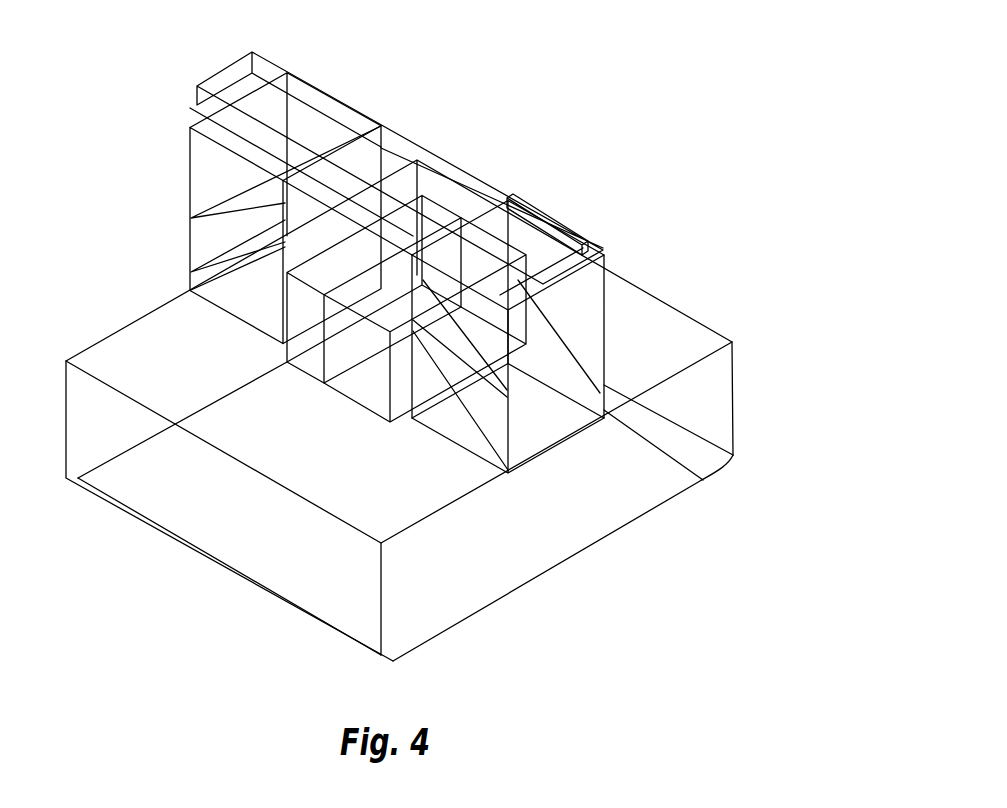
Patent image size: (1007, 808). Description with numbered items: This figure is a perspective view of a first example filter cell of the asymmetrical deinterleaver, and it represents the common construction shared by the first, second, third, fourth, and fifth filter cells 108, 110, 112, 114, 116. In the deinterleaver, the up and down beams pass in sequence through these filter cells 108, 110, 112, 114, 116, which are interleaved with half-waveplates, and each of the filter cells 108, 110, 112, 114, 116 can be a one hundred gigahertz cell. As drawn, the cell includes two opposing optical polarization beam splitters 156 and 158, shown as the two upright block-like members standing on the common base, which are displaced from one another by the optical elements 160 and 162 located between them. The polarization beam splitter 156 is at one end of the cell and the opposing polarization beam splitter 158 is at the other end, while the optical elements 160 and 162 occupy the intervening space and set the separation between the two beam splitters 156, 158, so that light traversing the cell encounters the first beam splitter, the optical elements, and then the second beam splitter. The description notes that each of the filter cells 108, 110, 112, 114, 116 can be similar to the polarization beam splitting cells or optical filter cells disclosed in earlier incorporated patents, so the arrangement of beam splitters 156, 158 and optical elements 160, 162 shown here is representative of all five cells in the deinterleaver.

The first filter cell 108 is at (466, 345).
The second filter cell 110 is at (466, 345).
The third filter cell 112 is at (466, 345).
The fourth filter cell 114 is at (466, 345).
The fifth filter cell 116 is at (466, 345).
The optical polarization beam splitter 156 is at (349, 86).
The optical polarization beam splitter 158 is at (589, 228).
The optical element 160 is at (307, 362).
The optical element 162 is at (367, 388).